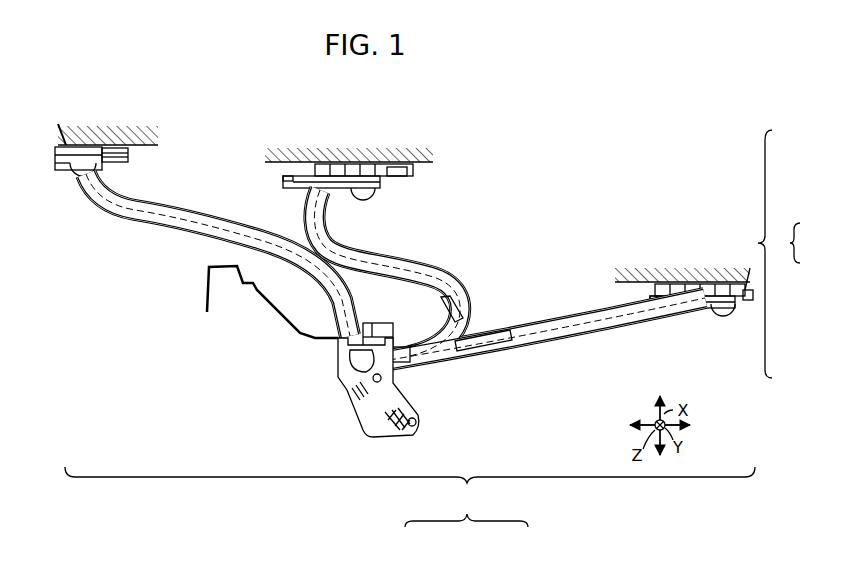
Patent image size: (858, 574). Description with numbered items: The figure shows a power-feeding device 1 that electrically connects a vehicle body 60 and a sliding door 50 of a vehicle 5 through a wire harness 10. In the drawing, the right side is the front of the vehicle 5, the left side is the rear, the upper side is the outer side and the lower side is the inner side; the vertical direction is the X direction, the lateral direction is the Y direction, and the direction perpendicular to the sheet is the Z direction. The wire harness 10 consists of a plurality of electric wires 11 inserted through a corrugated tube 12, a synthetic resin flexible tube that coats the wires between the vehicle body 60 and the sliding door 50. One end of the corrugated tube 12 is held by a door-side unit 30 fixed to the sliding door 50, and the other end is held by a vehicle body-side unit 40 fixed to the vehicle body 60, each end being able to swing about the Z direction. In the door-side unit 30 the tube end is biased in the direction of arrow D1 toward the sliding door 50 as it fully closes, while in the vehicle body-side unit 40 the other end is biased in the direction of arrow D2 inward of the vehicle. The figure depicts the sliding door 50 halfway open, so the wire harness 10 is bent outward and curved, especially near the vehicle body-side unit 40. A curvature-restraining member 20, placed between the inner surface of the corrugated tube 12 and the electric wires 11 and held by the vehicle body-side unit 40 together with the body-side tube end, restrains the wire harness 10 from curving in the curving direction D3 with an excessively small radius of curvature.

The power-feeding device 1 is at (410, 497).
The vehicle 5 is at (779, 254).
The wire harness 10 is at (162, 225).
The electric wires 11 is at (165, 207).
The corrugated tube 12 is at (190, 236).
The curvature-restraining member 20 is at (357, 307).
The door-side unit 30 is at (72, 178).
The vehicle body-side unit 40 is at (347, 413).
The sliding door 50 is at (148, 147).
The vehicle body 60 is at (207, 298).
The arrow D1 is at (113, 181).
The arrow D2 is at (377, 312).
The curving direction D3 is at (560, 312).